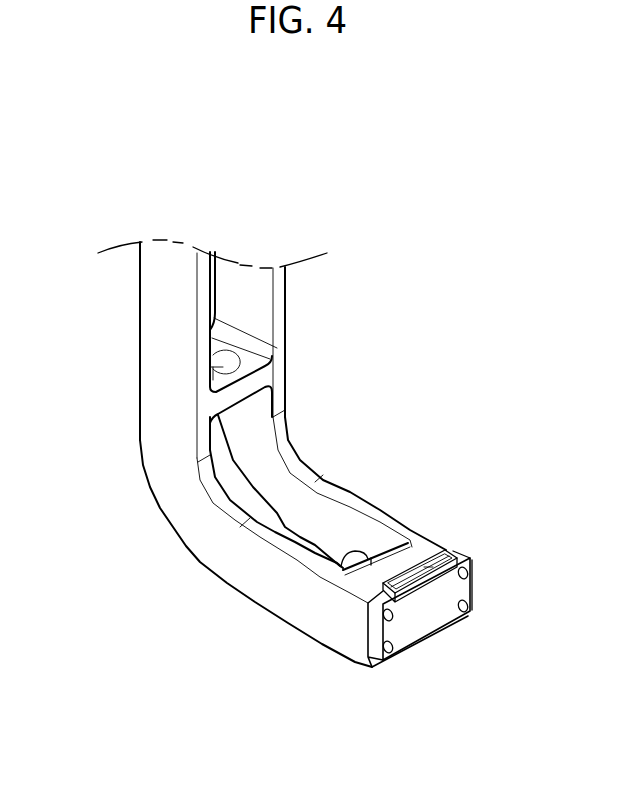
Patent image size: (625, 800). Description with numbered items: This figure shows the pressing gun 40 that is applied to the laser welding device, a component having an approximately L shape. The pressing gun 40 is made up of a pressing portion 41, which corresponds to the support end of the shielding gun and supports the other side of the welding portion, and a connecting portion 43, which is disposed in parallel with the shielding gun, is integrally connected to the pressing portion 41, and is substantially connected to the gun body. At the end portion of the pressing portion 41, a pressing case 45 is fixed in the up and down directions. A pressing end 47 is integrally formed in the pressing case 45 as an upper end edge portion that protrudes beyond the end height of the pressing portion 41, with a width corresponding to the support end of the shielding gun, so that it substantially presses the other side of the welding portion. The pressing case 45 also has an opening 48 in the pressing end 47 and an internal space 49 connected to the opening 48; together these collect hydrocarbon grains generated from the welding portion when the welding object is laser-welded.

The pressing gun 40 is at (235, 163).
The pressing portion 41 is at (272, 595).
The connecting portion 43 is at (162, 315).
The pressing case 45 is at (441, 641).
The pressing end 47 is at (450, 547).
The opening 48 is at (428, 566).
The internal space 49 is at (405, 565).